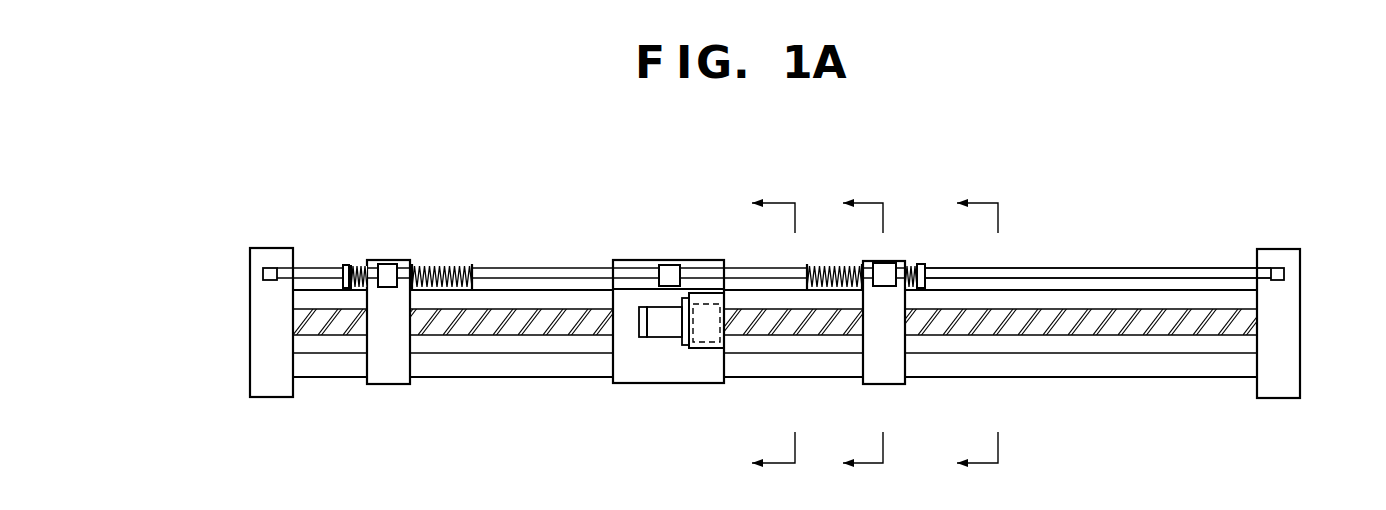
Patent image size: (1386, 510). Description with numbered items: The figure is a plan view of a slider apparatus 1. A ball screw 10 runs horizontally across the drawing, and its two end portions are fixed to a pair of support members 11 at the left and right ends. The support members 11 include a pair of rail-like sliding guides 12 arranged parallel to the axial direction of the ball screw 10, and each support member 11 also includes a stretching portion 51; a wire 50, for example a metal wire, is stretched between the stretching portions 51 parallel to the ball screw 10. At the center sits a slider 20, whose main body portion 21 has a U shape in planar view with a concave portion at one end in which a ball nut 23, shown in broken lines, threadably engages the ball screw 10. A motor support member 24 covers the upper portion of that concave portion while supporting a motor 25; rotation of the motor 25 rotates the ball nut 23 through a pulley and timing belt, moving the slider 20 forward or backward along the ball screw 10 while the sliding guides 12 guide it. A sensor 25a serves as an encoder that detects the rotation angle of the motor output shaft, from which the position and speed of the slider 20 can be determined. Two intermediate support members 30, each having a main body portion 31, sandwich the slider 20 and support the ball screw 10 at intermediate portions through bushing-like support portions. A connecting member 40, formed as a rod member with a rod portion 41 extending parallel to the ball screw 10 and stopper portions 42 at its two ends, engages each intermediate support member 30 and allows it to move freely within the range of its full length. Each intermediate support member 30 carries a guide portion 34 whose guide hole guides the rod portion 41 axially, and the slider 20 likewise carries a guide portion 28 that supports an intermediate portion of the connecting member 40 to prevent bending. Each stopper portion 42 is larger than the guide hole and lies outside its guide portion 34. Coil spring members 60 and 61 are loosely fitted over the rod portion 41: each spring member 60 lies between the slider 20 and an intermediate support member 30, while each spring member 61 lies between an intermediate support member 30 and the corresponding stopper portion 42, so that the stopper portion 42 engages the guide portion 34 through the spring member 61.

The slider apparatus 1 is at (197, 250).
The ball screw 10 is at (1257, 321).
The support member 11 is at (250, 383).
The sliding guide 12 is at (1052, 278).
The slider 20 is at (644, 405).
The main body portion 21 is at (687, 385).
The ball nut 23 is at (719, 345).
The motor support member 24 is at (705, 297).
The motor 25 is at (665, 338).
The sensor 25a is at (640, 338).
The guide portion 28 is at (665, 265).
The intermediate support member 30 is at (395, 394).
The main body portion 31 is at (367, 385).
The guide portion 34 is at (389, 264).
The connecting member 40 is at (575, 263).
The rod portion 41 is at (507, 273).
The stopper portion 42 is at (346, 265).
The wire 50 is at (1185, 268).
The stretching portion 51 is at (263, 274).
The spring member 60 is at (437, 265).
The spring member 61 is at (357, 266).